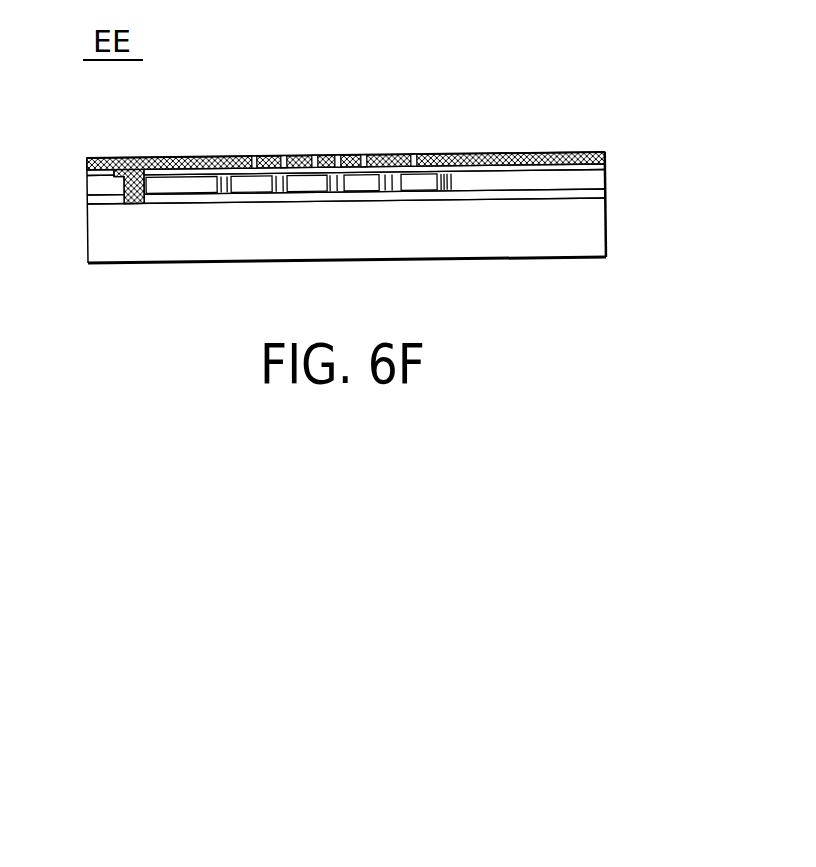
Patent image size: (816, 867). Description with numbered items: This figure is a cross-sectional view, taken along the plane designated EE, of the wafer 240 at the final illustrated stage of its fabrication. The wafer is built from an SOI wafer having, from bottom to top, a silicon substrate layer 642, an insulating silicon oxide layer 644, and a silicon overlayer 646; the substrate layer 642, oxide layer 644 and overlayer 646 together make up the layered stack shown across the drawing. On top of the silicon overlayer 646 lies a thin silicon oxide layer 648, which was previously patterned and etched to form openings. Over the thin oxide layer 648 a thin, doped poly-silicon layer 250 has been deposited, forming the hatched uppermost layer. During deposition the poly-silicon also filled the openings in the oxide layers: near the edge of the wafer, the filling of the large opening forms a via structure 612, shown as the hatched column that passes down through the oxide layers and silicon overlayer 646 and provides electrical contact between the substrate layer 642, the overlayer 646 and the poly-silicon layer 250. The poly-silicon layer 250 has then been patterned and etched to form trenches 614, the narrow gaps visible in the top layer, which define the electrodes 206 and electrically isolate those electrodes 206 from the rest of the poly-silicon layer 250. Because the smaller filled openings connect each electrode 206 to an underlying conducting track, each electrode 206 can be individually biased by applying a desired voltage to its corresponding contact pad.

The wafer 240 is at (728, 141).
The silicon substrate layer 642 is at (607, 235).
The insulating silicon oxide layer 644 is at (607, 195).
The silicon overlayer 646 is at (607, 178).
The thin silicon oxide layer 648 is at (607, 168).
The doped poly-silicon layer 250 is at (607, 153).
The via structure 612 is at (116, 186).
The trenches 614 is at (257, 147).
The electrode 206 is at (278, 154).